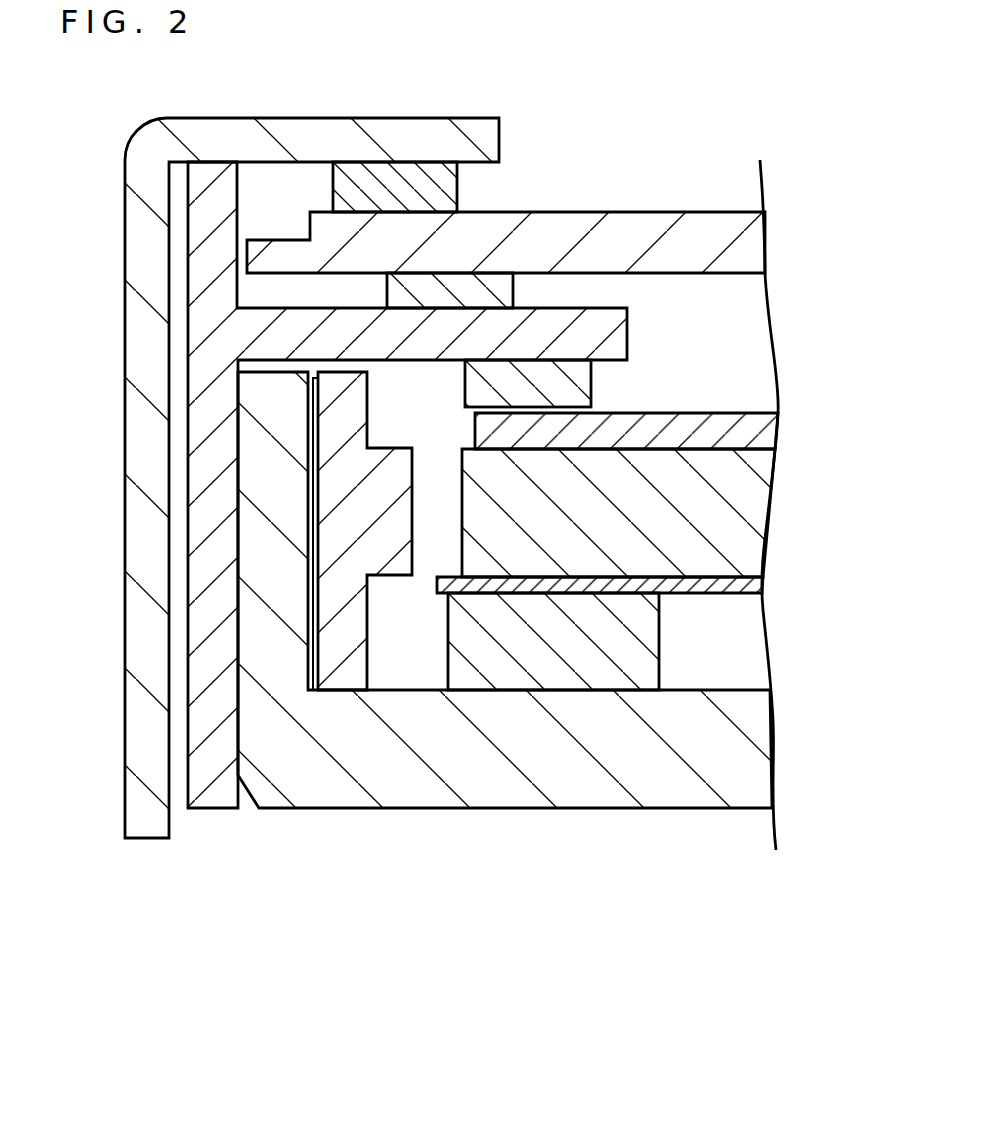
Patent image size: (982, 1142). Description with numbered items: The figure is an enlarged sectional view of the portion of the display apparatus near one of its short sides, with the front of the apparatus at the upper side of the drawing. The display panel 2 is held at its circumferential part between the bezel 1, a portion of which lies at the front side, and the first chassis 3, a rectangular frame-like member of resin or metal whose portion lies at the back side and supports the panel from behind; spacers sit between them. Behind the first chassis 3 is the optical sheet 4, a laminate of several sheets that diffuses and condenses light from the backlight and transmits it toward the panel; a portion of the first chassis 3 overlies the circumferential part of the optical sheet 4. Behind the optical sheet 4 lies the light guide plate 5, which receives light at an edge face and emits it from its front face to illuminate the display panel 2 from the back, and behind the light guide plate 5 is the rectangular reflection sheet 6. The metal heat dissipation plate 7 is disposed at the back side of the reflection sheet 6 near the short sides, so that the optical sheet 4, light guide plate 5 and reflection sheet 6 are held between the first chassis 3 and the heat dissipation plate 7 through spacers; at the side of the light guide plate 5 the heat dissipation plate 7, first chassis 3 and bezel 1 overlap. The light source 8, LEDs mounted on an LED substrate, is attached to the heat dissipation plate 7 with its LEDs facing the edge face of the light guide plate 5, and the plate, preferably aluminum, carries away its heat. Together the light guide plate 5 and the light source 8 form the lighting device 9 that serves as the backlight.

The bezel 1 is at (318, 118).
The display panel 2 is at (650, 212).
The first chassis 3 is at (200, 372).
The optical sheet 4 is at (768, 435).
The light guide plate 5 is at (567, 550).
The reflection sheet 6 is at (758, 590).
The heat dissipation plate 7 is at (685, 808).
The light source 8 is at (368, 668).
The lighting device 9 is at (546, 662).